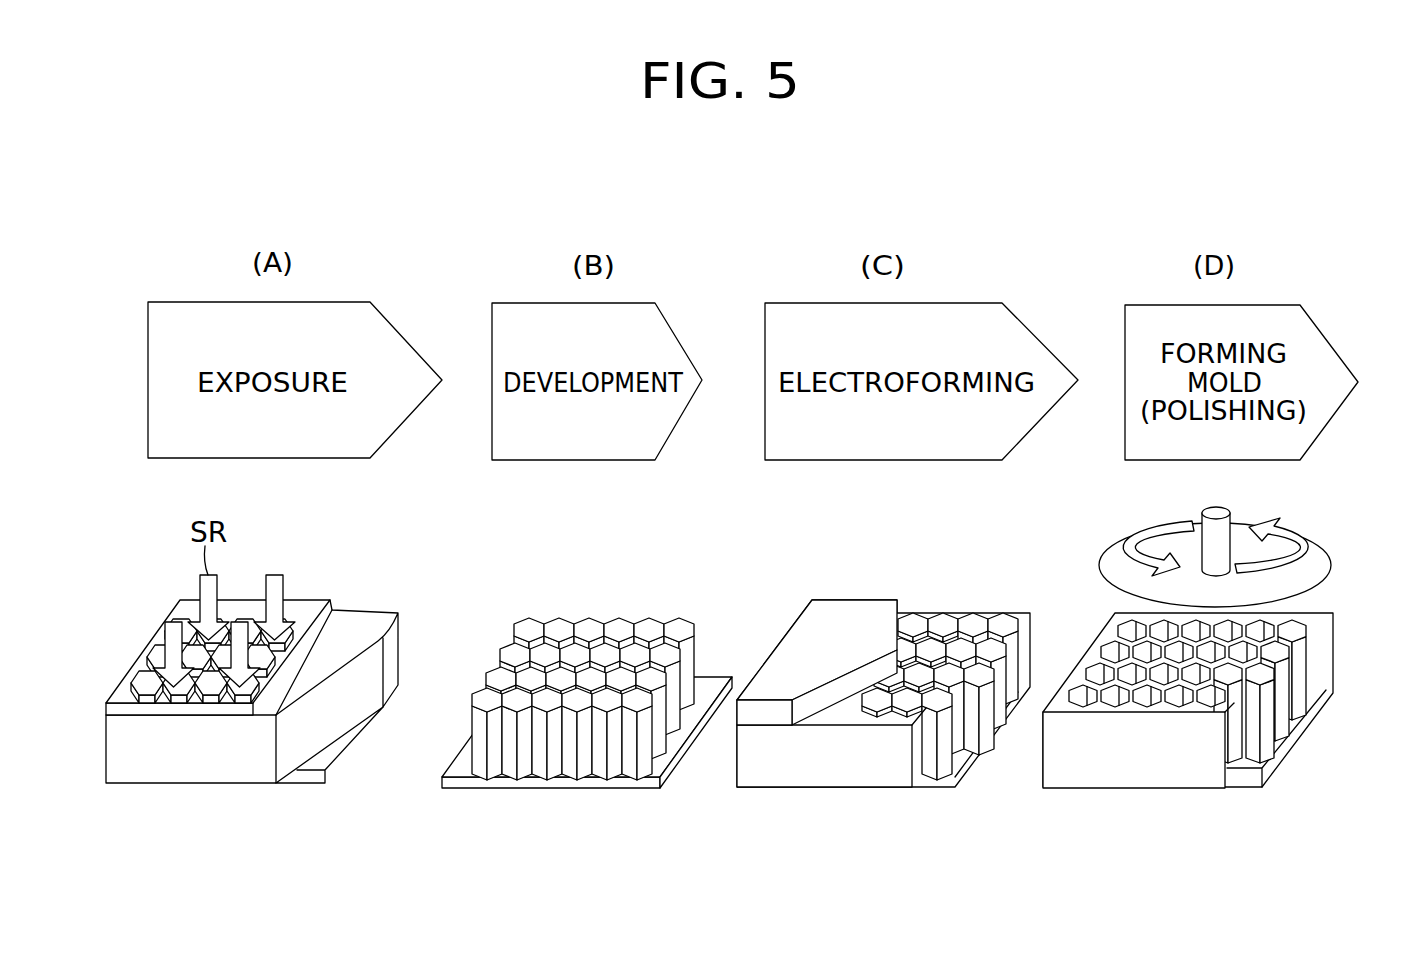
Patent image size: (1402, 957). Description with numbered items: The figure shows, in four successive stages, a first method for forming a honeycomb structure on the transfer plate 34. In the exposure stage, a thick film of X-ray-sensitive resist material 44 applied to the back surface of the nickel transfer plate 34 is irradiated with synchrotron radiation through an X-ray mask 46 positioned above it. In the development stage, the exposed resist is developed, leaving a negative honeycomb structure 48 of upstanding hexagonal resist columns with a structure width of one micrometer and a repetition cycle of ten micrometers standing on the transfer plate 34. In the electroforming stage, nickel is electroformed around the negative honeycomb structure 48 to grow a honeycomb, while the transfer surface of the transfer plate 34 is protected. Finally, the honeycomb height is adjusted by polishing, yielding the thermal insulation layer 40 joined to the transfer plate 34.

The transfer plate 34 is at (308, 770).
The resist material 44 is at (358, 623).
The X-ray mask 46 is at (168, 697).
The negative honeycomb structure 48 is at (615, 768).
The thermal insulation layer 40 is at (1338, 633).